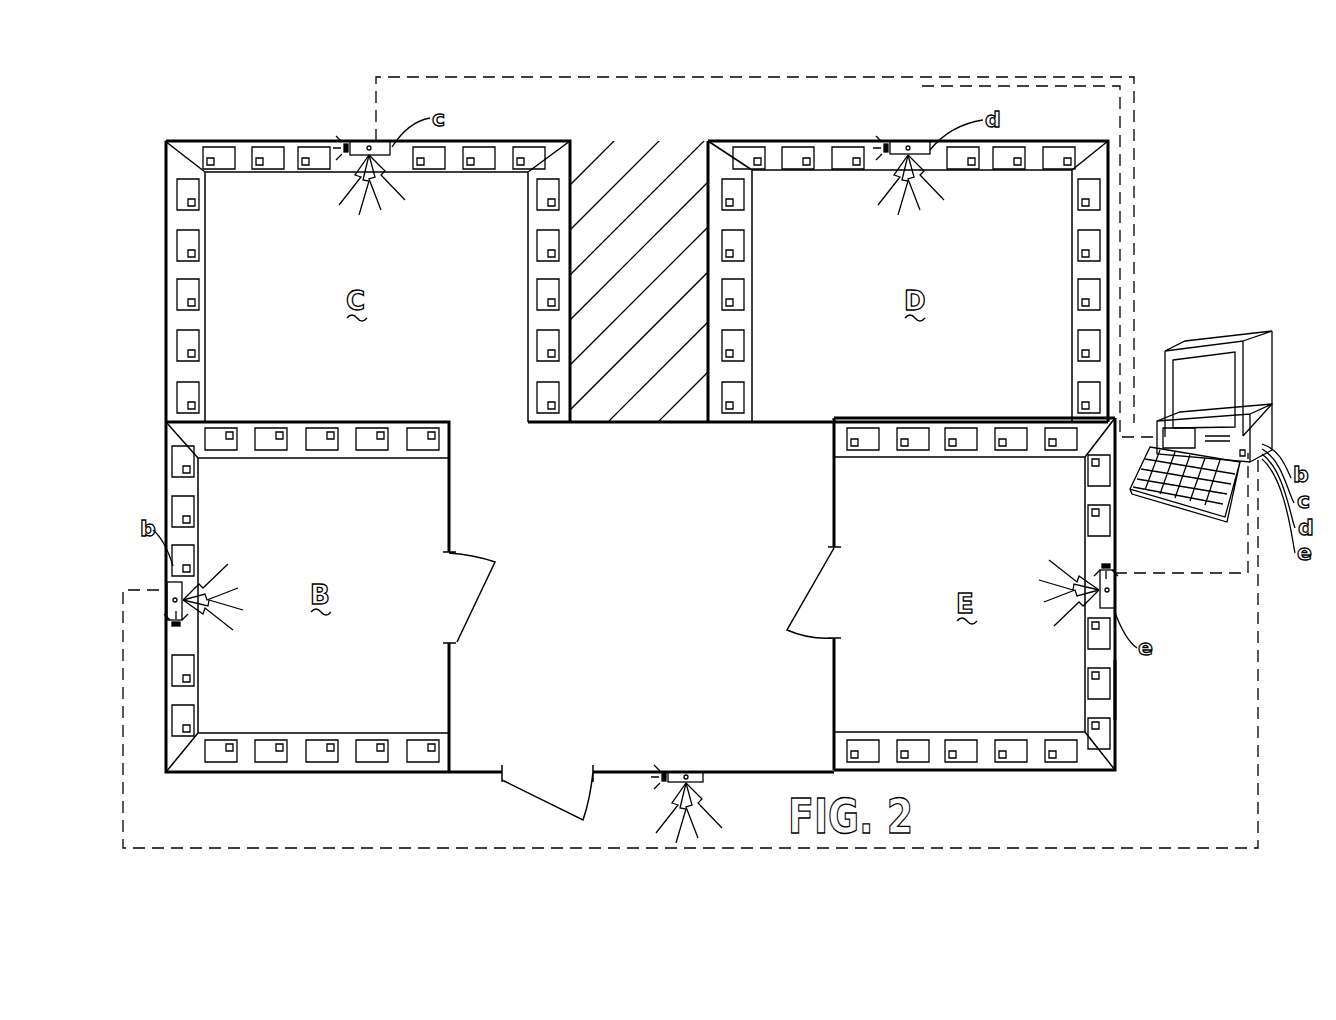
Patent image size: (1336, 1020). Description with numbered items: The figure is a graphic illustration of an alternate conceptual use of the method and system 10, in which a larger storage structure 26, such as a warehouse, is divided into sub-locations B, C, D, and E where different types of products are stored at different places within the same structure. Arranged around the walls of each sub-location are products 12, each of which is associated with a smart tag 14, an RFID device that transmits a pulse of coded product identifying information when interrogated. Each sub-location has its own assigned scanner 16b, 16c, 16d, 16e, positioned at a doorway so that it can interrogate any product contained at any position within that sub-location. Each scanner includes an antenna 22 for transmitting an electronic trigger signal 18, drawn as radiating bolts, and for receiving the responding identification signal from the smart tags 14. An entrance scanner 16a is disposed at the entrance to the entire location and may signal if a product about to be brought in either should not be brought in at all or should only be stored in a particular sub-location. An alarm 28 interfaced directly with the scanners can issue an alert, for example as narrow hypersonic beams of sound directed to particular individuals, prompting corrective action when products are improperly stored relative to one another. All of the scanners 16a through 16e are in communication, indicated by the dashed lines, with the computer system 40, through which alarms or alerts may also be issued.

The method and system 10 is at (1140, 180).
The products 12 is at (193, 290).
The smart tag 14 is at (192, 302).
The entrance scanner 16a is at (688, 773).
The scanner 16b is at (168, 590).
The scanner 16c is at (388, 141).
The scanner 16d is at (925, 141).
The scanner 16e is at (1113, 600).
The electronic trigger signal 18 is at (392, 193).
The antenna 22 is at (369, 141).
The structure 26 is at (1120, 690).
The alarm 28 is at (346, 146).
The computer system 40 is at (1233, 328).